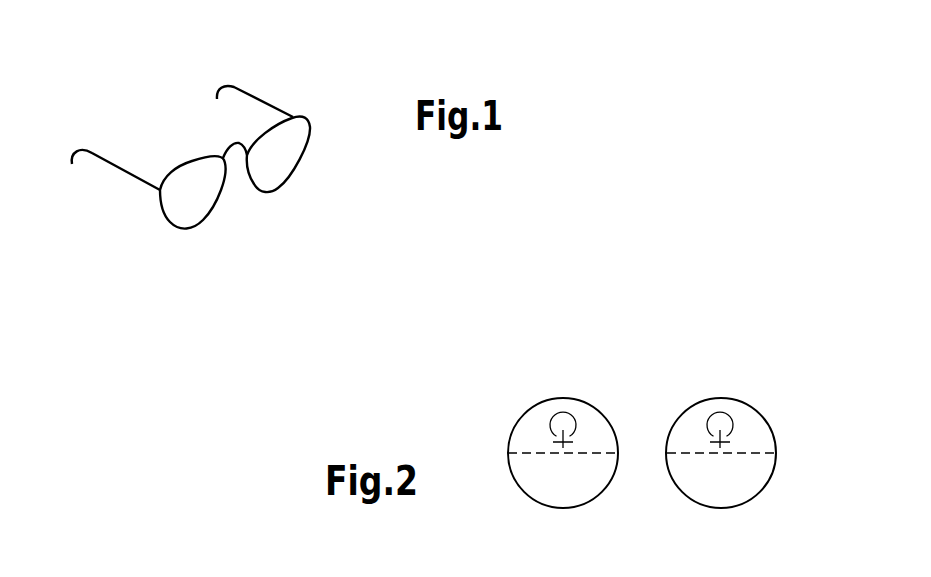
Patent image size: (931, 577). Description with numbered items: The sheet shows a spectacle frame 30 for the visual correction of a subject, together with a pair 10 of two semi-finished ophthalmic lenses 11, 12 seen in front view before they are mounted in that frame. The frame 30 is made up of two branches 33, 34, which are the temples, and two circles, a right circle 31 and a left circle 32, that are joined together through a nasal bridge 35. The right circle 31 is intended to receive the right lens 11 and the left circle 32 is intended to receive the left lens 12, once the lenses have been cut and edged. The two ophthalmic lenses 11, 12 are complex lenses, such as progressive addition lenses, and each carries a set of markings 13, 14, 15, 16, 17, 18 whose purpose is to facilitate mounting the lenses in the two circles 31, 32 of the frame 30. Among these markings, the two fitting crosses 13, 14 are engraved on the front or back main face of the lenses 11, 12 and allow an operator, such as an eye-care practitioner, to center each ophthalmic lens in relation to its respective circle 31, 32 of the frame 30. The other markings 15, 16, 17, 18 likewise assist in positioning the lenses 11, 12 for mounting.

In FIG. 2, the pair of semi-finished ophthalmic lenses 10 is at (621, 318).
In FIG. 2, the right lens 11 is at (525, 412).
In FIG. 2, the left lens 12 is at (773, 473).
In FIG. 2, the fitting cross 13 is at (562, 445).
In FIG. 2, the fitting cross 14 is at (720, 445).
In FIG. 2, the marking 15 is at (567, 412).
In FIG. 2, the marking 16 is at (713, 412).
In FIG. 2, the marking 17 is at (585, 455).
In FIG. 2, the marking 18 is at (757, 453).
In FIG. 1, the frame 30 is at (326, 100).
In FIG. 1, the right circle 31 is at (197, 227).
In FIG. 1, the left circle 32 is at (288, 183).
In FIG. 1, the branch 33 is at (122, 170).
In FIG. 1, the branch 34 is at (248, 87).
In FIG. 1, the nasal bridge 35 is at (238, 145).